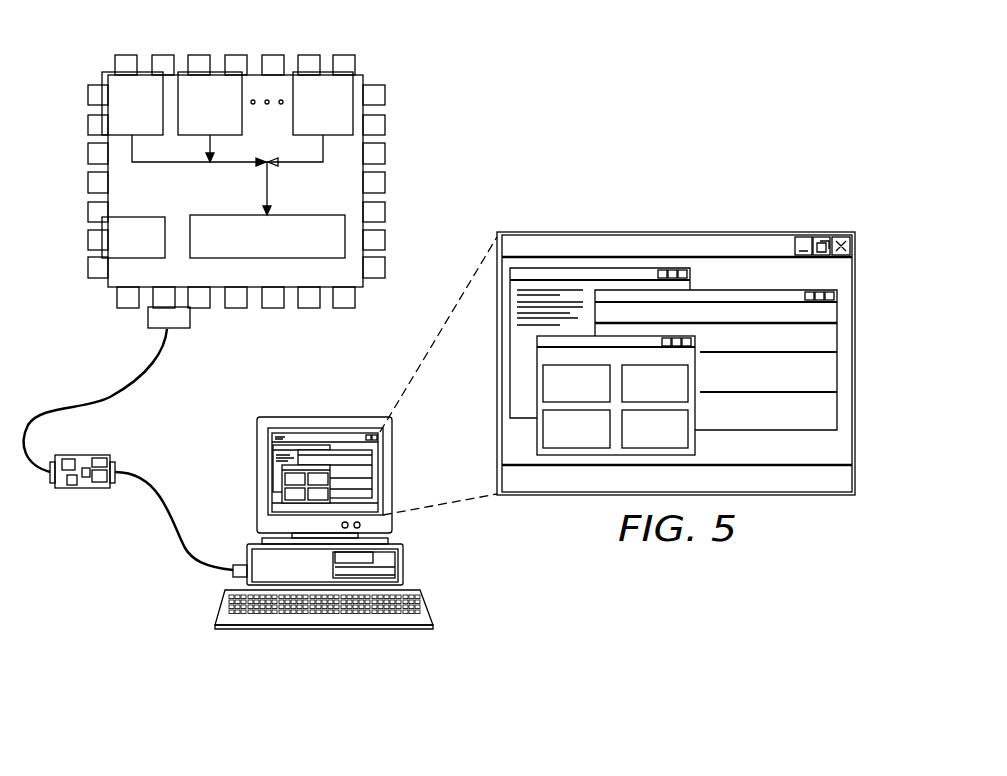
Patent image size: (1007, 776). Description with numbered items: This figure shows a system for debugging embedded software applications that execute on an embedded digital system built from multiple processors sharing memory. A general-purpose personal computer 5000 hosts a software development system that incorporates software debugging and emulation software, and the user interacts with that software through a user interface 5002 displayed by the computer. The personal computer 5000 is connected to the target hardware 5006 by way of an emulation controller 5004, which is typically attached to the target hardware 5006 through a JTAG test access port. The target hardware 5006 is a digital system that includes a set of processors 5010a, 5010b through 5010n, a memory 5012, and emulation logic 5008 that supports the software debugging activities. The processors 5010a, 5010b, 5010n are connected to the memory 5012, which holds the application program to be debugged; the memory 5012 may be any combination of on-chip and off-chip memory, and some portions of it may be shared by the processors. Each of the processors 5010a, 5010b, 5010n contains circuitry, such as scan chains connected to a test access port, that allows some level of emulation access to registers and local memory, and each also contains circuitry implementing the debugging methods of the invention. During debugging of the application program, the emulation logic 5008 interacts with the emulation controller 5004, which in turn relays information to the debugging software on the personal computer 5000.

The general-purpose personal computer 5000 is at (403, 567).
The user interface 5002 is at (738, 231).
The emulation controller 5004 is at (82, 489).
The target hardware 5006 is at (428, 103).
The emulation logic 5008 is at (132, 216).
The processor 5010a is at (110, 71).
The processor 5010b is at (220, 72).
The processor 5010n is at (323, 72).
The memory 5012 is at (325, 197).